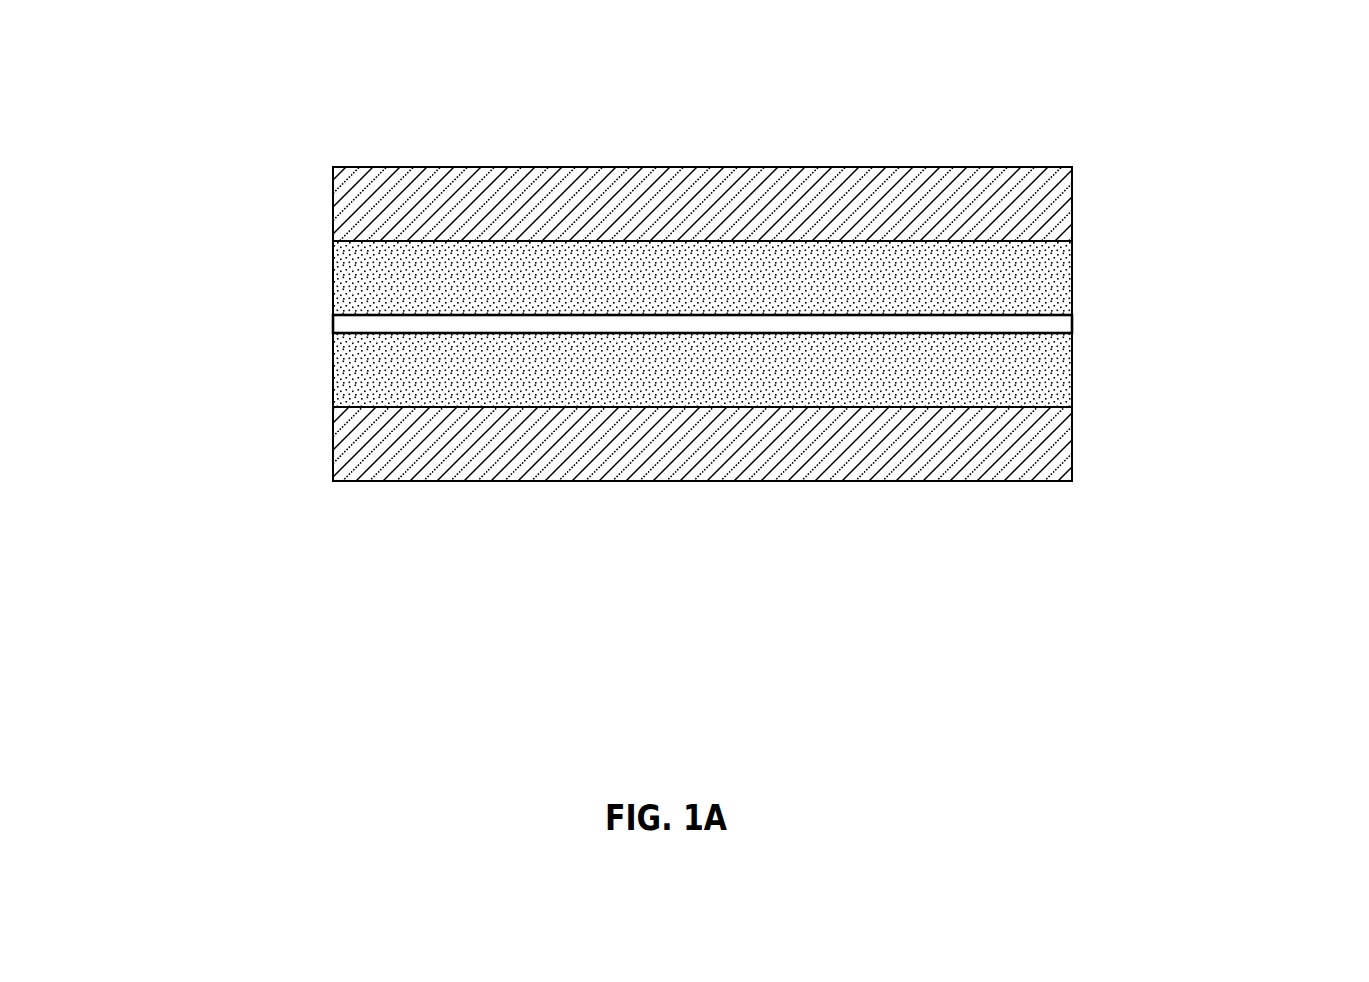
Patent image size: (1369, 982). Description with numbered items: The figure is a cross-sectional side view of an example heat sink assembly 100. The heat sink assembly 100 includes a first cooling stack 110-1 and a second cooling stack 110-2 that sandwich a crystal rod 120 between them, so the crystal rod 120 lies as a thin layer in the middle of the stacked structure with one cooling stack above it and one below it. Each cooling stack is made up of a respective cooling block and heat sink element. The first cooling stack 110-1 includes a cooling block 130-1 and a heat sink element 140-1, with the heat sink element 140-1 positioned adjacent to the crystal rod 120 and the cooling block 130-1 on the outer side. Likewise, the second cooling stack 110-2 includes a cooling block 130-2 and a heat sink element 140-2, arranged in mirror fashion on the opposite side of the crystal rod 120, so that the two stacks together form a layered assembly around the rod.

The heat sink assembly 100 is at (276, 65).
The first cooling stack 110-1 is at (655, 241).
The second cooling stack 110-2 is at (656, 407).
The crystal rod 120 is at (1102, 324).
The cooling block 130-1 is at (592, 204).
The cooling block 130-2 is at (592, 444).
The heat sink element 140-1 is at (567, 278).
The heat sink element 140-2 is at (568, 370).